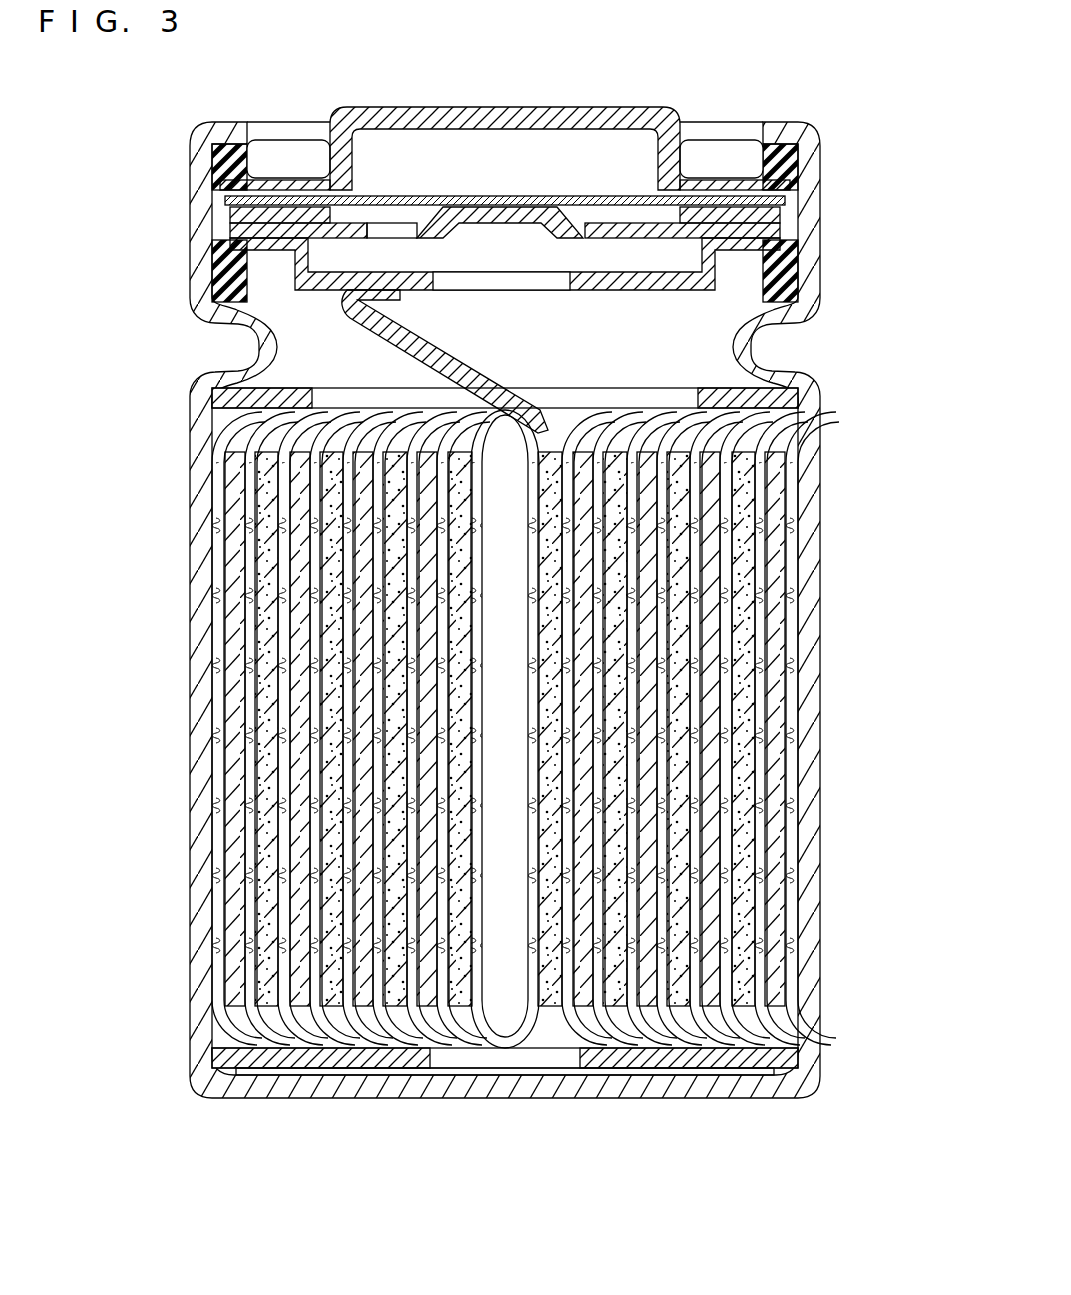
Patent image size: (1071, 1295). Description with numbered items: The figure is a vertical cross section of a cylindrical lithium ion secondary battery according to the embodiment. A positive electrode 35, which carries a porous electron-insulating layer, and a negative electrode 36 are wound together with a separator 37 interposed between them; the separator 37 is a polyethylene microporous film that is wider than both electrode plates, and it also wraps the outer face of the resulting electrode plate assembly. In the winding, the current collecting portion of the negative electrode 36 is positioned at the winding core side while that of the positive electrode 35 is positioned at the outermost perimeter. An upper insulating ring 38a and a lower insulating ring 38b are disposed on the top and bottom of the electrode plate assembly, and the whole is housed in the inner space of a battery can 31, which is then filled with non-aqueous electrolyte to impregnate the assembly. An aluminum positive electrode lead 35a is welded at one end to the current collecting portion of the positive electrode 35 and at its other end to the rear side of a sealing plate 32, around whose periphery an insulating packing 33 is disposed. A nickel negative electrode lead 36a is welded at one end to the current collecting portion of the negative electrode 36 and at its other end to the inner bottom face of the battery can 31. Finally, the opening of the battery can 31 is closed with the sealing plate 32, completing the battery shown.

The battery can 31 is at (195, 582).
The sealing plate 32 is at (404, 107).
The insulating packing 33 is at (784, 201).
The positive electrode 35 is at (739, 830).
The positive electrode lead 35a is at (475, 362).
The negative electrode 36 is at (776, 768).
The negative electrode lead 36a is at (566, 1075).
The separator 37 is at (796, 643).
The upper insulating ring 38a is at (772, 396).
The lower insulating ring 38b is at (770, 1052).